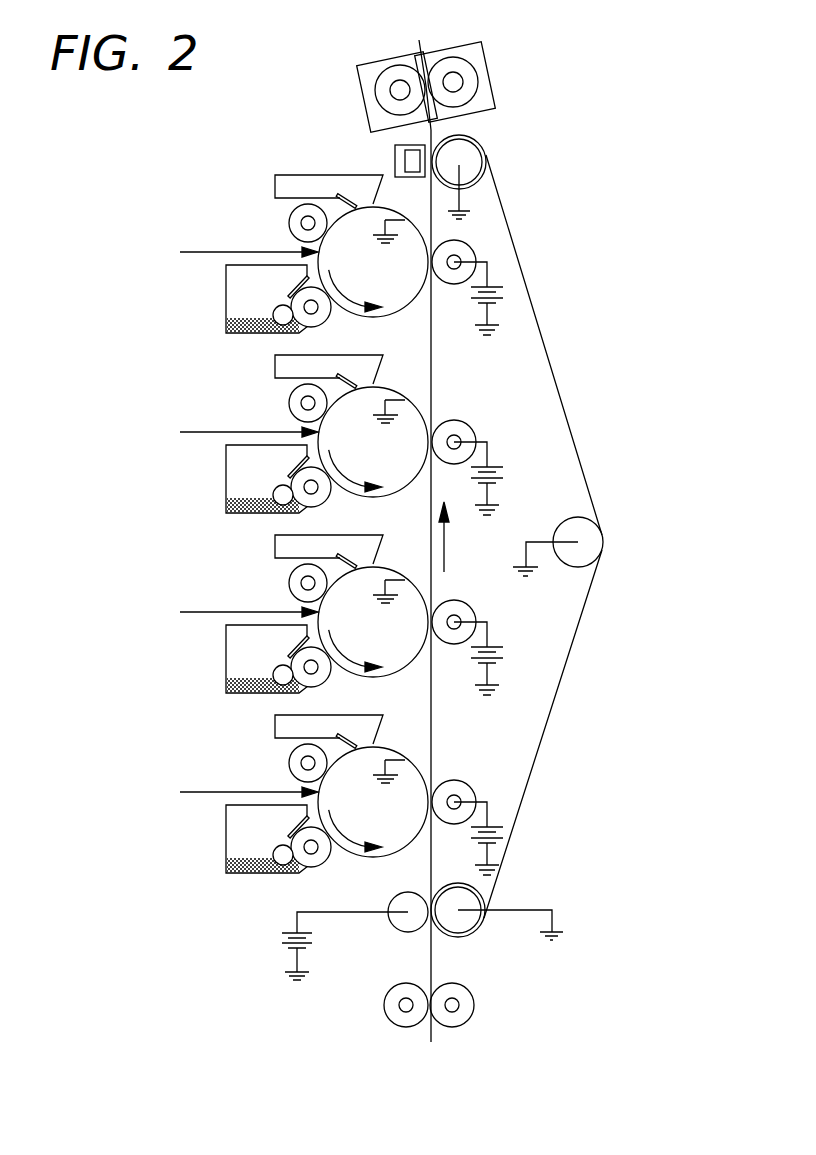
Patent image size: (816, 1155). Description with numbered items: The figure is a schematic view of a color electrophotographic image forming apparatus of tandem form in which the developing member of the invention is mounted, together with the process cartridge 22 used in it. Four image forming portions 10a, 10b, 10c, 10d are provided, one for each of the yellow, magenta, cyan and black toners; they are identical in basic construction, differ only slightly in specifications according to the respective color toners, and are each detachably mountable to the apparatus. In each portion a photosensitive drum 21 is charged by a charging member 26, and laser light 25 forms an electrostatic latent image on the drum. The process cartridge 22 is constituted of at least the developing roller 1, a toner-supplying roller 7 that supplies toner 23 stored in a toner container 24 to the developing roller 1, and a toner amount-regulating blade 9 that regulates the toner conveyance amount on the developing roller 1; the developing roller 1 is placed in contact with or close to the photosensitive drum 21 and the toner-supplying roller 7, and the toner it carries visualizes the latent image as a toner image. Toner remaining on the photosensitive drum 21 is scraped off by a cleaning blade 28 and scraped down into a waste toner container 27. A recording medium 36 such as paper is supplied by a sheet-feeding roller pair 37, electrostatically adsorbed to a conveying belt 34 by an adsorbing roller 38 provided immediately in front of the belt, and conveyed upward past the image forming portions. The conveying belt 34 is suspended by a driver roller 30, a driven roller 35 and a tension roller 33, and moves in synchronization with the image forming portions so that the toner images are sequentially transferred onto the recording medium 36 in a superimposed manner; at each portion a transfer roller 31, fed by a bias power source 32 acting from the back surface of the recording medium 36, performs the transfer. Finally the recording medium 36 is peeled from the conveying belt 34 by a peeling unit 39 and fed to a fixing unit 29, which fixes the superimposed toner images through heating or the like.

The developing roller 1 is at (327, 322).
The toner-supplying roller 7 is at (262, 322).
The toner amount-regulating blade 9 is at (289, 291).
The image forming portion 10a is at (121, 165).
The image forming portion 10b is at (121, 345).
The image forming portion 10c is at (121, 525).
The image forming portion 10d is at (121, 705).
The photosensitive drum 21 is at (402, 303).
The process cartridge 22 is at (175, 260).
The toner 23 is at (226, 318).
The toner container 24 is at (226, 283).
The laser light 25 is at (195, 250).
The charging member 26 is at (289, 222).
The waste toner container 27 is at (275, 180).
The cleaning blade 28 is at (338, 195).
The fixing unit 29 is at (490, 85).
The driver roller 30 is at (486, 163).
The transfer roller 31 is at (473, 246).
The bias power source 32 is at (503, 289).
The tension roller 33 is at (603, 544).
The conveying belt 34 is at (572, 657).
The driven roller 35 is at (470, 922).
The recording medium 36 is at (419, 45).
The sheet-feeding roller pair 37 is at (474, 1008).
The adsorbing roller 38 is at (395, 929).
The peeling unit 39 is at (395, 157).